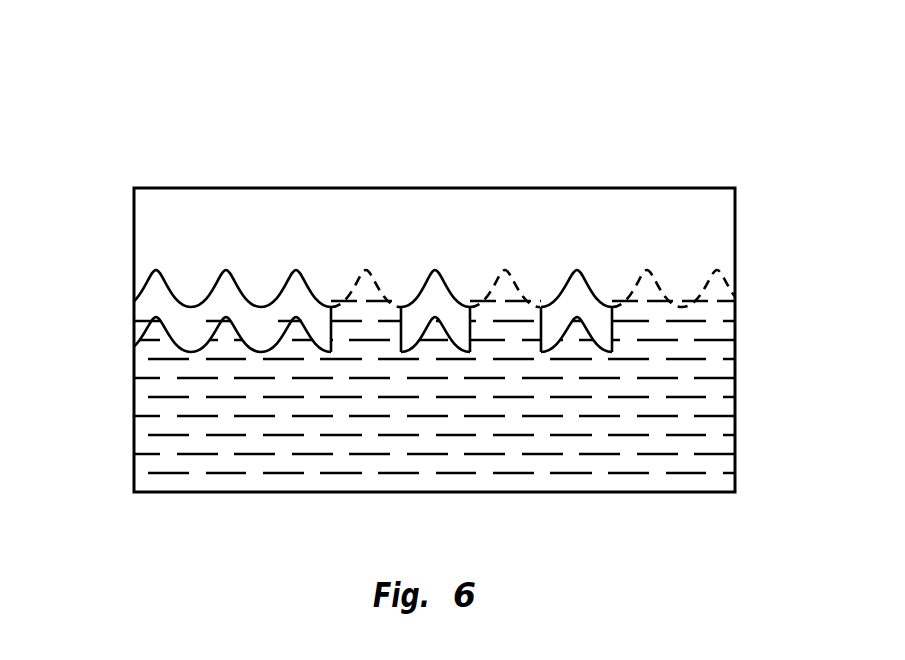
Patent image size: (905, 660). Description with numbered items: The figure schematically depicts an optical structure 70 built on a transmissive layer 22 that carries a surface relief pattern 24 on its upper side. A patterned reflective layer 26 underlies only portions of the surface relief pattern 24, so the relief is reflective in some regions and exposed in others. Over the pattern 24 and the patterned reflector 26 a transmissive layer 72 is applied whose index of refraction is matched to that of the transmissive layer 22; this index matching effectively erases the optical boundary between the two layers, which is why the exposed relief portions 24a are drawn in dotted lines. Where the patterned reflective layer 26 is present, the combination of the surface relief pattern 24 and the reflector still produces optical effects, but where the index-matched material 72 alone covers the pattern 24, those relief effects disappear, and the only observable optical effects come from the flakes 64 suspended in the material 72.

The optical structure 70 is at (441, 306).
The transmissive layer 22 is at (727, 228).
The surface relief pattern 24 is at (180, 283).
The removed portions of textured layer 24a is at (490, 287).
The patterned reflective layer 26 is at (150, 310).
The transmissive layer 72 is at (718, 405).
The flakes 64 is at (223, 473).